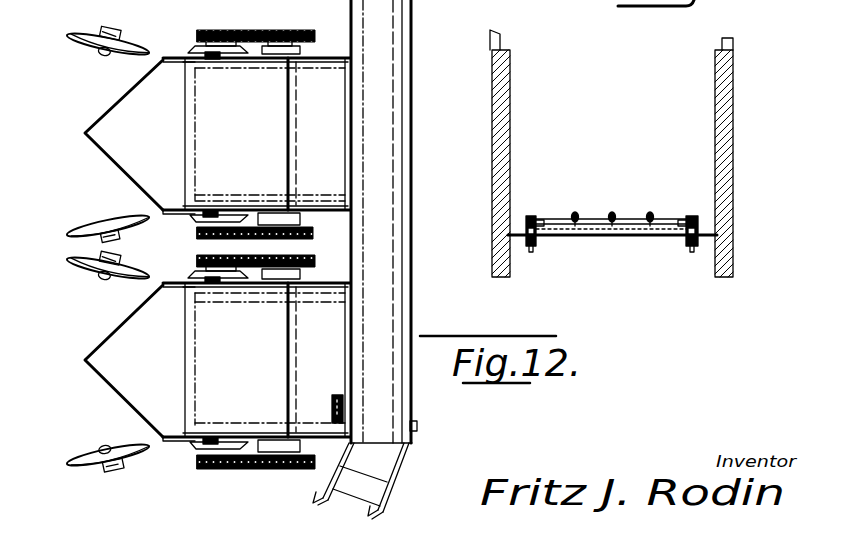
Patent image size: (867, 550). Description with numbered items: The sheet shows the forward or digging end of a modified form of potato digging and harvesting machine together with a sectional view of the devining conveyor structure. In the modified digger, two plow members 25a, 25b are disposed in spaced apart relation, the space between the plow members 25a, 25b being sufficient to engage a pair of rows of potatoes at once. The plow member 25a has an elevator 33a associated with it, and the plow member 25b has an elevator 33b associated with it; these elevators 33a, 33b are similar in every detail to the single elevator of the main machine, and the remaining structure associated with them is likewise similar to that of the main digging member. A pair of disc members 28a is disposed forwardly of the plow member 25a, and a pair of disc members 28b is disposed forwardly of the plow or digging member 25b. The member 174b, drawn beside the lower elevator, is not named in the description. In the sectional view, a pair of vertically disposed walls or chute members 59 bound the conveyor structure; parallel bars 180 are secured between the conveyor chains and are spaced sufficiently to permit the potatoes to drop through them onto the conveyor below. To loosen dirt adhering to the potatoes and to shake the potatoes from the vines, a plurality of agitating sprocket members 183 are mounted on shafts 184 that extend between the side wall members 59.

In FIG. 10, the plow member 25a is at (130, 392).
In FIG. 10, the plow member 25b is at (122, 155).
In FIG. 10, the disc members 28a is at (128, 458).
In FIG. 10, the disc members 28b is at (130, 222).
In FIG. 10, the elevator 33a is at (194, 383).
In FIG. 10, the elevator 33b is at (196, 158).
In FIG. 10, the ladder chute 174b is at (360, 453).
In FIG. 12, the chute members 59 is at (510, 150).
In FIG. 12, the parallel bars 180 is at (597, 222).
In FIG. 12, the agitating sprocket members 183 is at (536, 244).
In FIG. 12, the shafts 184 is at (659, 238).